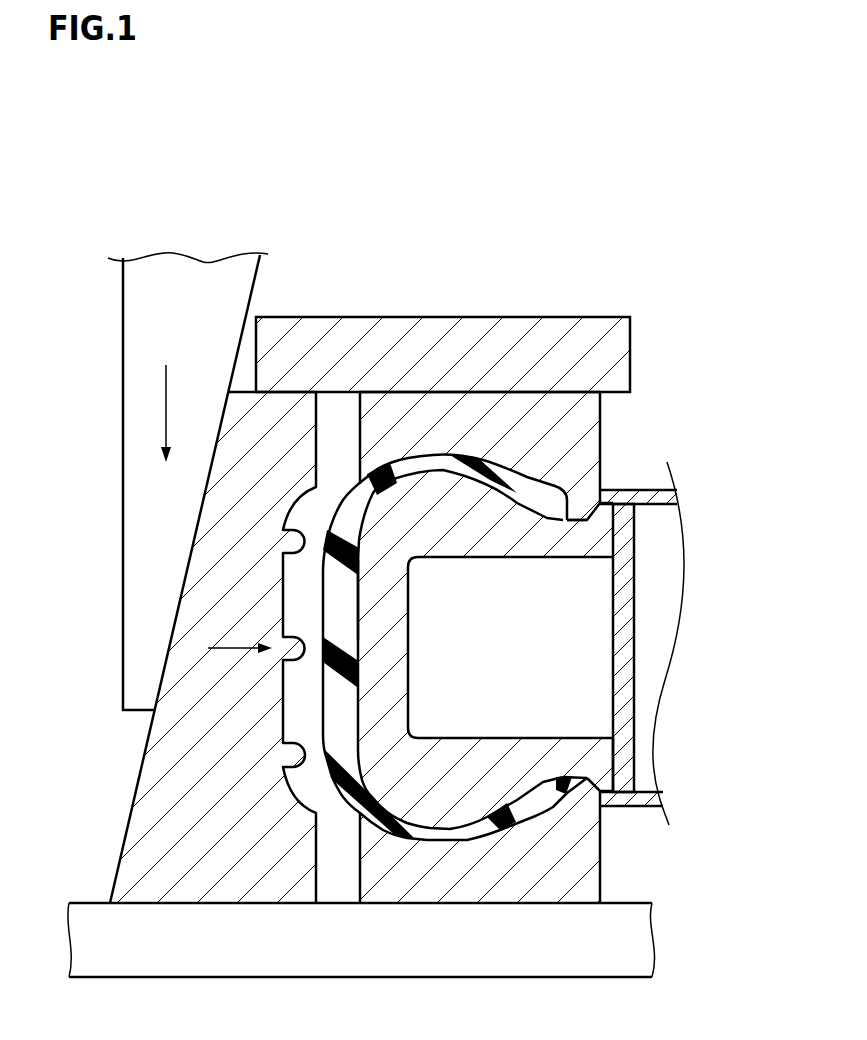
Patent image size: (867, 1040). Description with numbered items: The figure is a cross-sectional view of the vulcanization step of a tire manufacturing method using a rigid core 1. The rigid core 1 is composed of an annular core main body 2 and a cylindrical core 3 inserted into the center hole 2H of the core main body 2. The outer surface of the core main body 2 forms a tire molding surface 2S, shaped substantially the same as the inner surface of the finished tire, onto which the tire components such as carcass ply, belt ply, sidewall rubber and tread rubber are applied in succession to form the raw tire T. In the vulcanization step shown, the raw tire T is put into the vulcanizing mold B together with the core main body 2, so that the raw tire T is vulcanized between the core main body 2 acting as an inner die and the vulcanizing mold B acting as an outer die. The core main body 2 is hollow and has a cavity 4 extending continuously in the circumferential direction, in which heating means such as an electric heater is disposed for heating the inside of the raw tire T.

The rigid core 1 is at (707, 583).
The core main body 2 is at (385, 634).
The tire molding surface 2S is at (355, 597).
The center hole 2H is at (633, 533).
The cylindrical core 3 is at (635, 710).
The cavity 4 is at (521, 667).
The vulcanizing mold B is at (508, 420).
The raw tire T is at (338, 727).